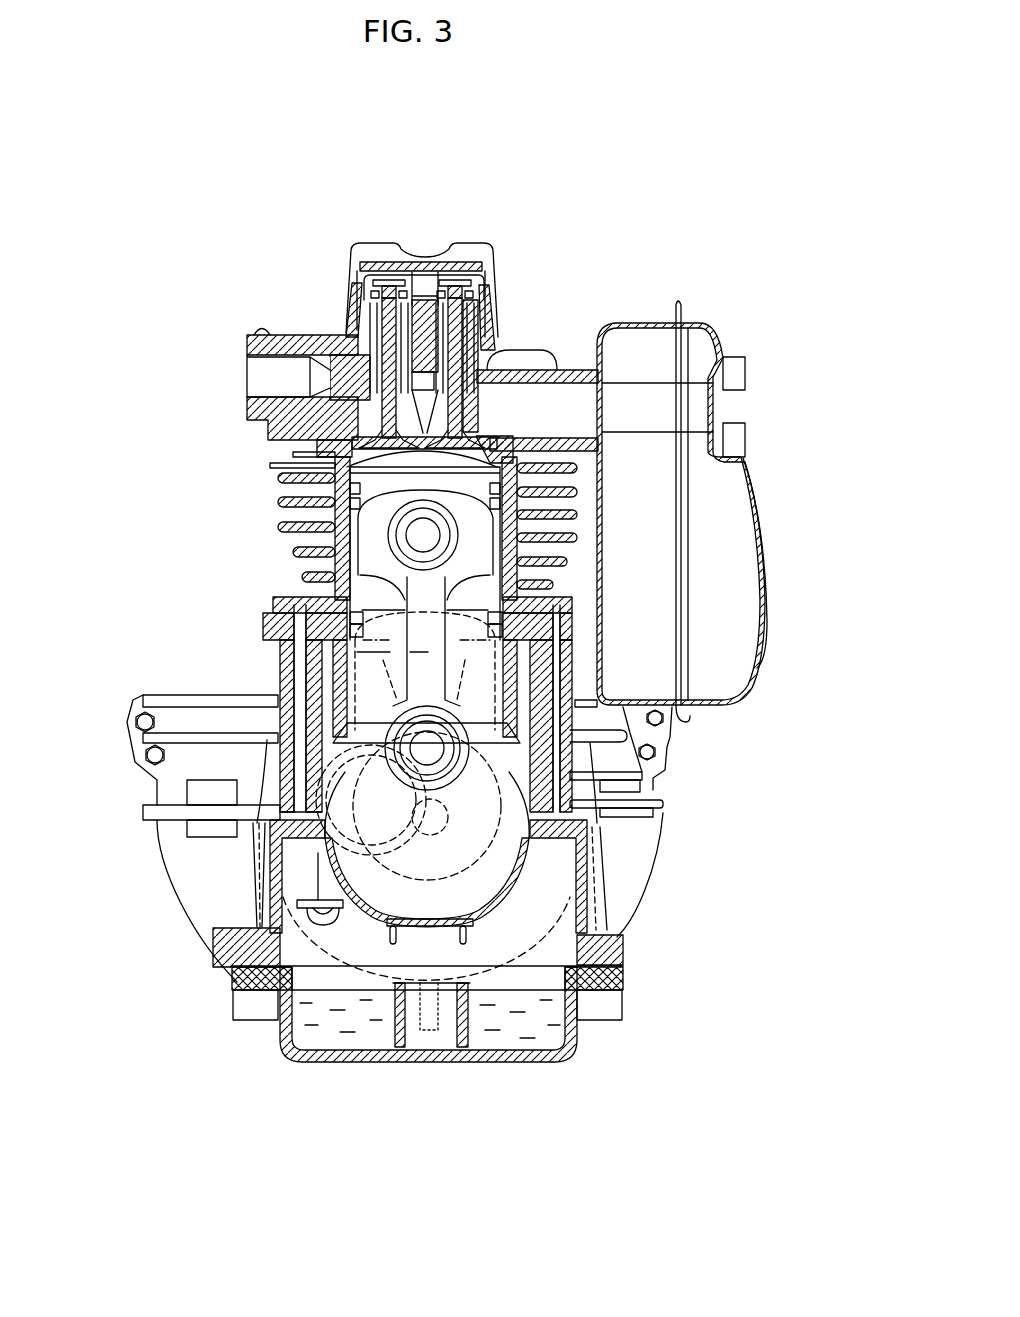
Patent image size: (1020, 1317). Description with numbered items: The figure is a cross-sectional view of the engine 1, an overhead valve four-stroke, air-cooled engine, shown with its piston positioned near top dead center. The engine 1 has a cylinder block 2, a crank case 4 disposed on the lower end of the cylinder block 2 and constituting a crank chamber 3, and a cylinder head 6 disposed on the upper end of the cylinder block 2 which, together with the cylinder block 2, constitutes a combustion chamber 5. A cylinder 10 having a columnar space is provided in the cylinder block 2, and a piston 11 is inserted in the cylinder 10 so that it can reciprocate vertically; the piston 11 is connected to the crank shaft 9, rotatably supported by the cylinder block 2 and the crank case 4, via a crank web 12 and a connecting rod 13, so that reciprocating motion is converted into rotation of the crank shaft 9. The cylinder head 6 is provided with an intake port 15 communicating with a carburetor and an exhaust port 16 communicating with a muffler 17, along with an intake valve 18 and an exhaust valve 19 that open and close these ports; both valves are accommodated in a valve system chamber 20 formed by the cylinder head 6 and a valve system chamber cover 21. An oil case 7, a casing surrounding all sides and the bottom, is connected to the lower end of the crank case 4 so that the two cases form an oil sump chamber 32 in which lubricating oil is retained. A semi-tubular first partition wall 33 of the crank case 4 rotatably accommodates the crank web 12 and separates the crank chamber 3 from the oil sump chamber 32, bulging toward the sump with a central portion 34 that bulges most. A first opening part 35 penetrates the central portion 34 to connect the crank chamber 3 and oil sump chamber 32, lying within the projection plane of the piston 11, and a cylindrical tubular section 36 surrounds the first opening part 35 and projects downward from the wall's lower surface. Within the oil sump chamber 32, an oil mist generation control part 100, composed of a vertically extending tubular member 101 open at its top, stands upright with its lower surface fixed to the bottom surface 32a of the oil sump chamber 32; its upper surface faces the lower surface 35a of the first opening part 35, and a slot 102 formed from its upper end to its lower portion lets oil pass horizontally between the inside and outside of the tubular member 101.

The engine 1 is at (421, 228).
The cylinder block 2 is at (283, 521).
The crank chamber 3 is at (647, 775).
The crank case 4 is at (590, 901).
The combustion chamber 5 is at (347, 435).
The cylinder head 6 is at (254, 305).
The oil case 7 is at (283, 1050).
The crank shaft 9 is at (605, 789).
The cylinder 10 is at (297, 535).
The piston 11 is at (340, 454).
The crank web 12 is at (320, 852).
The connecting rod 13 is at (275, 650).
The intake port 15 is at (340, 382).
The exhaust port 16 is at (477, 407).
The muffler 17 is at (650, 342).
The intake valve 18 is at (363, 283).
The exhaust valve 19 is at (485, 295).
The valve system chamber 20 is at (423, 280).
The valve system chamber cover 21 is at (470, 270).
The oil sump chamber 32 is at (557, 1027).
The bottom surface of the oil sump chamber 32a is at (513, 1048).
The first partition wall 33 is at (358, 914).
The central portion 34 is at (372, 1010).
The first opening part 35 is at (440, 868).
The lower surface of the first opening part 35a is at (413, 932).
The tubular section 36 is at (452, 923).
The oil mist generation control part 100 is at (421, 937).
The tubular member 101 is at (400, 1047).
The slot 102 is at (428, 1032).